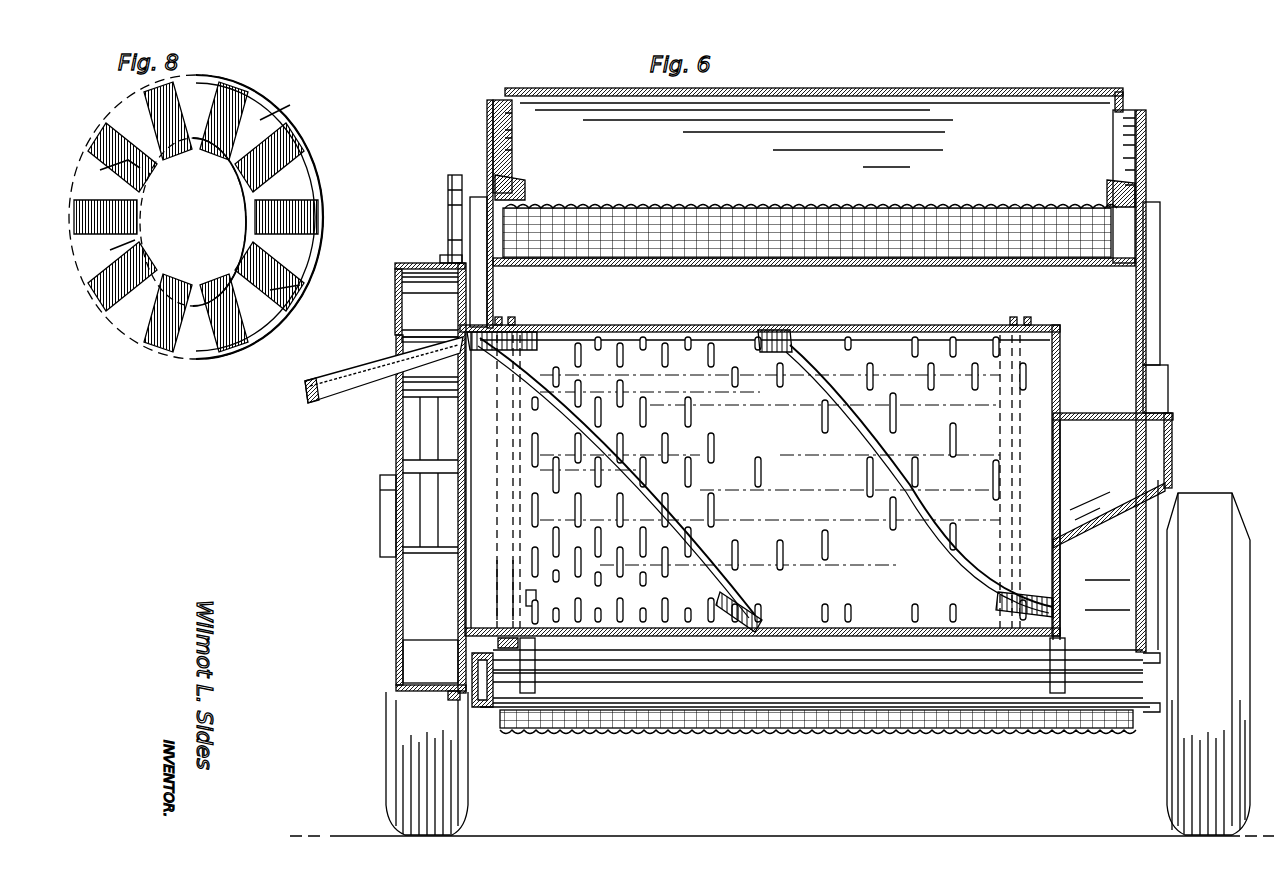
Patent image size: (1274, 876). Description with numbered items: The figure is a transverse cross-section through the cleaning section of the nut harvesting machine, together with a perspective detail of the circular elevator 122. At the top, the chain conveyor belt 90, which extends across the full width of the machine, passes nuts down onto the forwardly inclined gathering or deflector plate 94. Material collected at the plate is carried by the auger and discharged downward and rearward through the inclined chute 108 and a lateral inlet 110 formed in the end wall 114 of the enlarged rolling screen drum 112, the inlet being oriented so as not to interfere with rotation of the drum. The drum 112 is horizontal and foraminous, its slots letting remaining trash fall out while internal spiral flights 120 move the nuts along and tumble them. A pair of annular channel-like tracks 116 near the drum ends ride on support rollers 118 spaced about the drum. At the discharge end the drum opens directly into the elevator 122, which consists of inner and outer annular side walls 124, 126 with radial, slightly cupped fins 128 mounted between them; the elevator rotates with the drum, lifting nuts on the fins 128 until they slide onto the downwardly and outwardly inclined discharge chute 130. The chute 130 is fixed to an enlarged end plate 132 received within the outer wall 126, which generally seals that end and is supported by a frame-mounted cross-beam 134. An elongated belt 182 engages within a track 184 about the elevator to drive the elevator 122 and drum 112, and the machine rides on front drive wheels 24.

In FIG. 6, the front drive wheels 24 is at (432, 760).
In FIG. 6, the chain conveyor belt 90 is at (793, 205).
In FIG. 6, the gathering or deflector plate 94 is at (720, 267).
In FIG. 6, the inclined chute 108 is at (1135, 388).
In FIG. 6, the lateral inlet 110 is at (1098, 414).
In FIG. 6, the rolling screen drum 112 is at (885, 313).
In FIG. 6, the end wall 114 is at (1060, 360).
In FIG. 6, the annular channel-like tracks 116 is at (520, 323).
In FIG. 6, the support rollers 118 is at (507, 562).
In FIG. 6, the spiral flights 120 is at (930, 514).
In FIG. 8, the circular elevator 122 is at (340, 232).
In FIG. 6, the circular elevator 122 is at (418, 248).
In FIG. 8, the inner annular side wall 124 is at (280, 167).
In FIG. 6, the inner annular side wall 124 is at (463, 285).
In FIG. 8, the outer annular side wall 126 is at (255, 240).
In FIG. 6, the outer annular side wall 126 is at (396, 300).
In FIG. 8, the radial fins 128 is at (195, 103).
In FIG. 6, the radial fins 128 is at (428, 467).
In FIG. 6, the discharge chute 130 is at (345, 402).
In FIG. 6, the end plate 132 is at (396, 440).
In FIG. 6, the cross-beam 134 is at (381, 512).
In FIG. 6, the elongated belt 182 is at (449, 191).
In FIG. 6, the track 184 is at (440, 258).